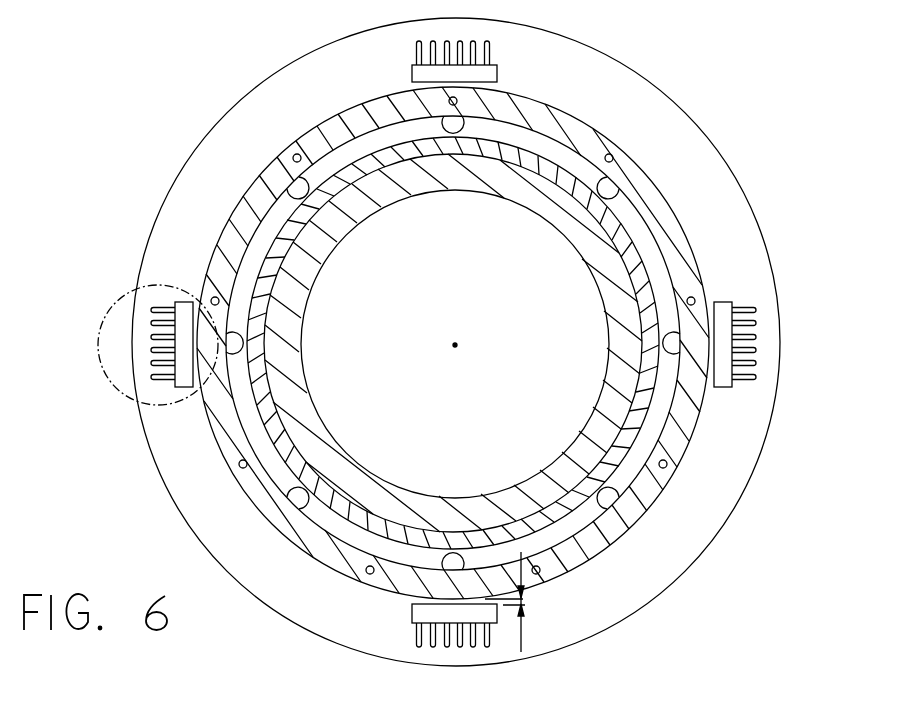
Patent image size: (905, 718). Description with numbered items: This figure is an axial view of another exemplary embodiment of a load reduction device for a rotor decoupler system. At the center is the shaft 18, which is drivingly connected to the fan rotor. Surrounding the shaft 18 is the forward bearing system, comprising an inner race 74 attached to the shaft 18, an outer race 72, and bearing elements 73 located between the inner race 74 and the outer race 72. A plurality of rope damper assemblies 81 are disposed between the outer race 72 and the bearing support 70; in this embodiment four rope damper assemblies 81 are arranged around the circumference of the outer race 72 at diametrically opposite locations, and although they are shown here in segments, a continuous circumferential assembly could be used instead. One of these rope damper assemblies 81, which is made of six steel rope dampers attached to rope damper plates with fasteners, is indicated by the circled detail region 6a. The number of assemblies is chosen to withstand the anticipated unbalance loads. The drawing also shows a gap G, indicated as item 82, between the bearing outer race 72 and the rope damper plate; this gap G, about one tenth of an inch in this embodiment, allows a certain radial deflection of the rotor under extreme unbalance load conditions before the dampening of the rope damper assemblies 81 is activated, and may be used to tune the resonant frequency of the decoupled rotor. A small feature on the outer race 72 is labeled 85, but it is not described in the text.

The bearing support 70 is at (713, 540).
The outer race 72 is at (550, 109).
The bearing elements 73 is at (588, 212).
The inner race 74 is at (597, 432).
The shaft 18 is at (510, 484).
The rope damper assembly 81 is at (502, 43).
The gap 82 is at (595, 630).
The rivet 85 is at (617, 153).
The gap G is at (522, 638).
The detail region 6a is at (118, 298).